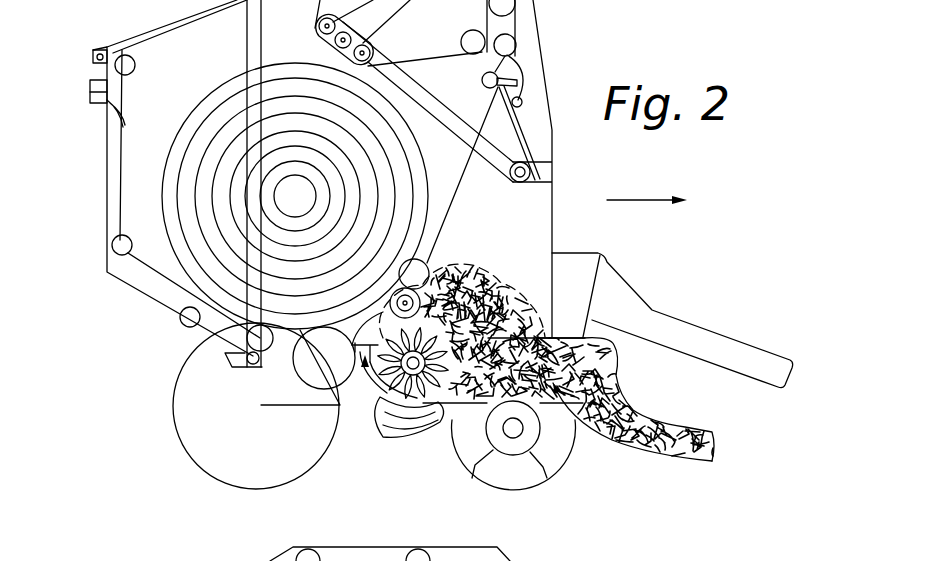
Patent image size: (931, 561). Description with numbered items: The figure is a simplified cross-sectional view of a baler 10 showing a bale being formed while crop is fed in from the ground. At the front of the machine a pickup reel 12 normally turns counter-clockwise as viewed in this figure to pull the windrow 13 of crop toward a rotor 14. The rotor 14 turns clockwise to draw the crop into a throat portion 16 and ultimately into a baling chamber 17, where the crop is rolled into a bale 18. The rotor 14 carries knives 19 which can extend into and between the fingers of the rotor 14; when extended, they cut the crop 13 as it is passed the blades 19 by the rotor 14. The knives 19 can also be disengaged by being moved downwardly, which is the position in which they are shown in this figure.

The baler 10 is at (600, 50).
The pickup reel 12 is at (542, 442).
The windrow 13 is at (653, 422).
The rotor 14 is at (445, 372).
The throat portion 16 is at (225, 353).
The baling chamber 17 is at (173, 287).
The bale 18 is at (198, 193).
The knives 19 is at (393, 418).